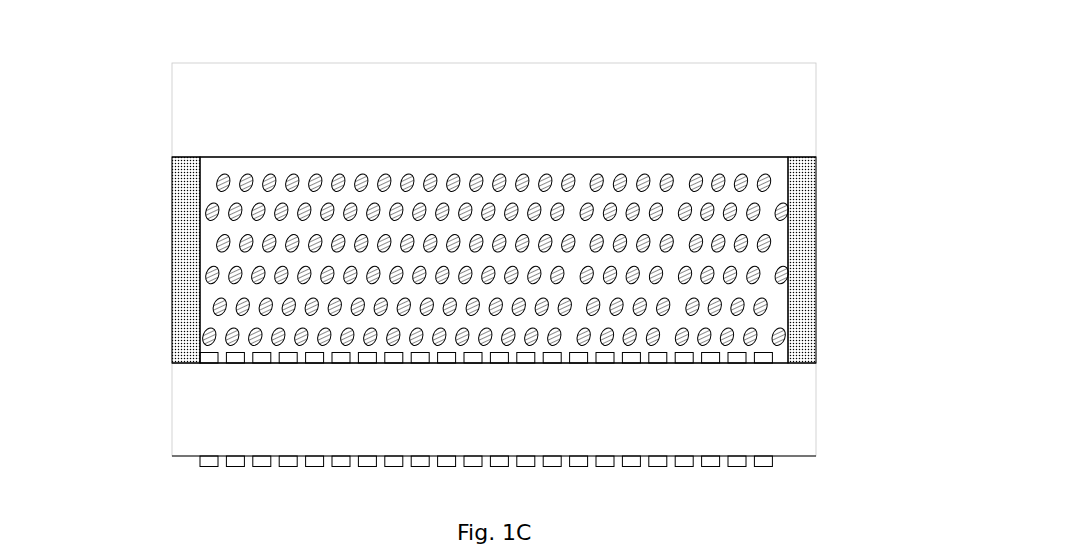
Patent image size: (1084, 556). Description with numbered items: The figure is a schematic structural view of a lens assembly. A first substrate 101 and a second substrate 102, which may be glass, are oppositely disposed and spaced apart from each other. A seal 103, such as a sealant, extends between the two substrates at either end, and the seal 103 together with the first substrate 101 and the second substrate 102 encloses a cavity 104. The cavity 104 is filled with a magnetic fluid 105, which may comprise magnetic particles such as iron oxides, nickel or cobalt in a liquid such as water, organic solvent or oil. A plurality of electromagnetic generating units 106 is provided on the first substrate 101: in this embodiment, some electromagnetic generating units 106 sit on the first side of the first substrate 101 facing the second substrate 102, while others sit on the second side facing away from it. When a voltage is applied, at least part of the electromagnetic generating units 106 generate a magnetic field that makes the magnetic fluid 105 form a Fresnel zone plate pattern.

The first substrate 101 is at (816, 423).
The second substrate 102 is at (816, 120).
The seal 103 is at (172, 277).
The cavity 104 is at (483, 163).
The magnetic fluid 105 is at (212, 203).
The electromagnetic generating units 106 is at (763, 352).